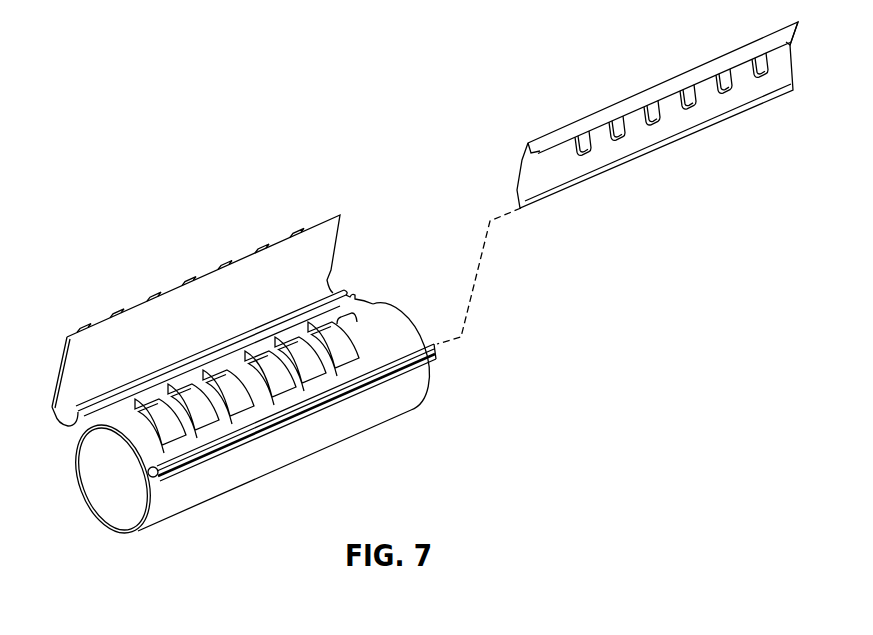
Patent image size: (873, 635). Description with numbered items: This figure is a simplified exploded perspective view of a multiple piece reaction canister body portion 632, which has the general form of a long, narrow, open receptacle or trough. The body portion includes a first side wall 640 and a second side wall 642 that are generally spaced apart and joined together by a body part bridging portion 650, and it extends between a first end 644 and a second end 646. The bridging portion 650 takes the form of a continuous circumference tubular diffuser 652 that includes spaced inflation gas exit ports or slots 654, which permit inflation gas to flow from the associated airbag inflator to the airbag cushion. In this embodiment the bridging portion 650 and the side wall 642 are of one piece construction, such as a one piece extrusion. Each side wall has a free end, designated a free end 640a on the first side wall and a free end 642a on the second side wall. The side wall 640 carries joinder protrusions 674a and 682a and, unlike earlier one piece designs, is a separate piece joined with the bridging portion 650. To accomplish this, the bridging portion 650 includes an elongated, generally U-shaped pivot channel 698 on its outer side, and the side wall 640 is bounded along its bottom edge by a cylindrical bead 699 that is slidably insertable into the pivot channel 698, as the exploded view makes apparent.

The reaction canister body portion 632 is at (167, 231).
The second side wall 642 is at (257, 287).
The free end of second side wall 642a is at (100, 333).
The inflation gas exit ports or slots 654 is at (312, 345).
The body part bridging portion 650 is at (272, 447).
The second end 646 is at (133, 540).
The tubular diffuser 652 is at (97, 468).
The first end 644 is at (432, 389).
The pivot channel 698 is at (345, 383).
The first side wall 640 is at (647, 137).
The free end of first side wall 640a is at (762, 47).
The joinder protrusion 674a is at (787, 44).
The joinder protrusion 682a is at (532, 160).
The cylindrical bead 699 is at (525, 208).